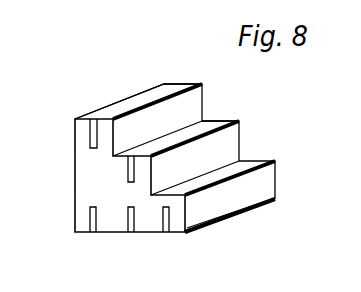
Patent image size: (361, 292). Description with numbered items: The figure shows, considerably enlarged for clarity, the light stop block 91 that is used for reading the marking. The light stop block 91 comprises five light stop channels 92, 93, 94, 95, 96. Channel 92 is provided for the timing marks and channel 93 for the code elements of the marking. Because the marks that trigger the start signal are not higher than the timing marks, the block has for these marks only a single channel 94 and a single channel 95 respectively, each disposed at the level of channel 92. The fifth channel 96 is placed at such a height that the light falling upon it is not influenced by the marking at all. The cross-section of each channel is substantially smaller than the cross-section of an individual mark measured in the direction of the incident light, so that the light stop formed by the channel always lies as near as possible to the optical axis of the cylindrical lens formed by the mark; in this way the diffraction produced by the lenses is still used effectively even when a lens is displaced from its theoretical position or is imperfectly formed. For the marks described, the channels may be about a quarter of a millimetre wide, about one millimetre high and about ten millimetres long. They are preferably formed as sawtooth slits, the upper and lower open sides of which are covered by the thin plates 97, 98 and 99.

The light stop block 91 is at (152, 84).
The light stop channel 92 is at (130, 233).
The light stop channel 93 is at (128, 174).
The light stop channel 94 is at (92, 234).
The light stop channel 95 is at (167, 233).
The light stop channel 96 is at (90, 131).
The thin plate 97 is at (172, 88).
The thin plate 98 is at (209, 122).
The thin plate 99 is at (276, 200).